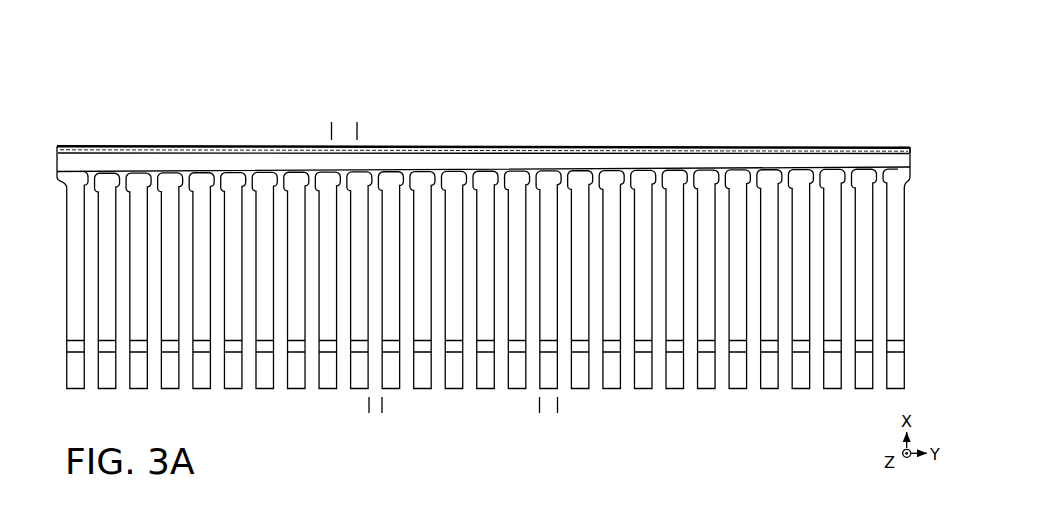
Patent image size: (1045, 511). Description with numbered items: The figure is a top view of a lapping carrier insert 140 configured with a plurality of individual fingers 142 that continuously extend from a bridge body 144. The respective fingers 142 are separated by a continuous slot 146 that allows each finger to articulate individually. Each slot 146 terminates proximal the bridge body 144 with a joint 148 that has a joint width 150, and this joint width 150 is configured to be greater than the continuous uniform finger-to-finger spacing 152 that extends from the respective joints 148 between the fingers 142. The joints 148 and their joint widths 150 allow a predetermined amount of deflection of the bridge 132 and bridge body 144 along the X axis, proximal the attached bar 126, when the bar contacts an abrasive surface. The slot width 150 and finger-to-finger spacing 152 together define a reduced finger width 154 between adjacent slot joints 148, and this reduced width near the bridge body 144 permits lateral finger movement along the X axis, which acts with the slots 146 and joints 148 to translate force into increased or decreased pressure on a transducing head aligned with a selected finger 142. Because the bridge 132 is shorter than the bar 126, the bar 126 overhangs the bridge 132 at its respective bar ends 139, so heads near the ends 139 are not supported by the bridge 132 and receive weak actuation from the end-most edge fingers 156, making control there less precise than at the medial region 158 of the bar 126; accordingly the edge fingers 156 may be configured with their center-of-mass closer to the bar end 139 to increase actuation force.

The carrier insert 140 is at (142, 52).
The bar end 139 is at (66, 145).
The bar 126 is at (186, 150).
The joint width 150 is at (378, 132).
The medial region 158 is at (485, 145).
The joint 148 is at (657, 167).
The bridge 132 is at (912, 149).
The bridge body 144 is at (911, 161).
The edge finger 156 is at (70, 305).
The finger-to-finger spacing 152 is at (403, 405).
The slot 146 is at (438, 393).
The reduced finger width 154 is at (578, 405).
The finger 142 is at (668, 390).